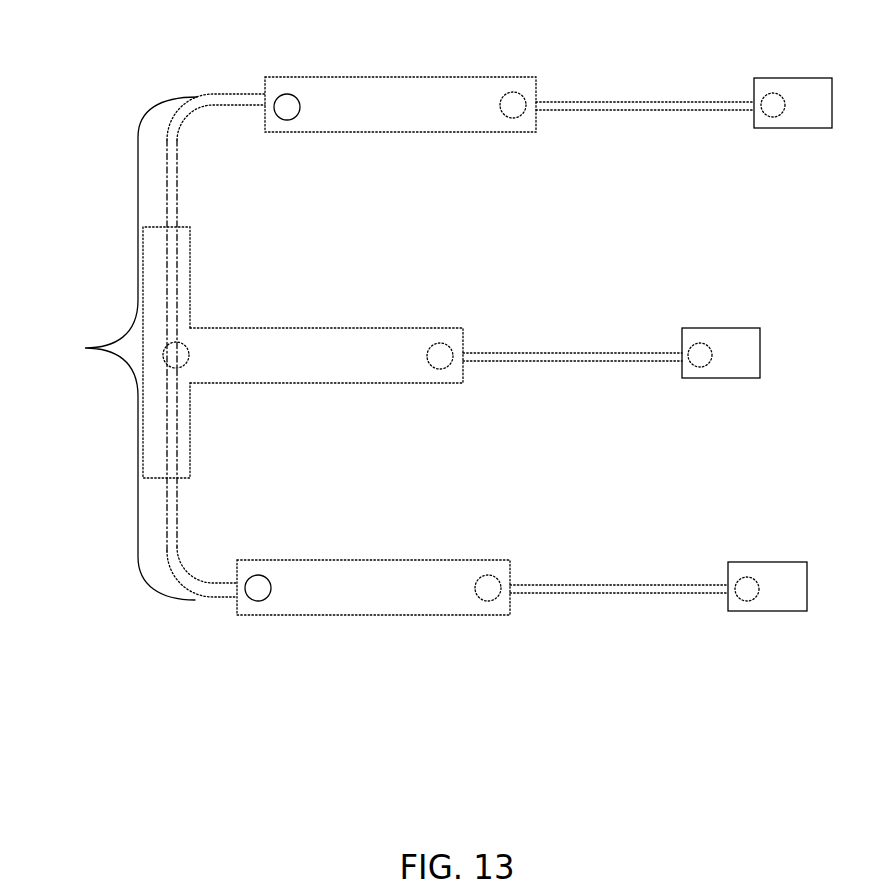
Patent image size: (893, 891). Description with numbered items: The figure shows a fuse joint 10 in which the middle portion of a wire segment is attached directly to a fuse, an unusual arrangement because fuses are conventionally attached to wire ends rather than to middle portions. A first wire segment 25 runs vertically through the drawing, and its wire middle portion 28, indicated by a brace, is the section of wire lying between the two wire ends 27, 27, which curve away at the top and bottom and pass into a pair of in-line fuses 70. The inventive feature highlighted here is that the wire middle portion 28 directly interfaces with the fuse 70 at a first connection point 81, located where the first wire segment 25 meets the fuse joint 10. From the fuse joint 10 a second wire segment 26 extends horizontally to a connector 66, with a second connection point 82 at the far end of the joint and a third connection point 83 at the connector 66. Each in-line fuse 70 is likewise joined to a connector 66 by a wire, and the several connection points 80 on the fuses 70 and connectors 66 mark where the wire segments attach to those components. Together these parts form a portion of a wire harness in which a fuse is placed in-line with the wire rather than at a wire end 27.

The fuse joint 10 is at (303, 376).
The first wire segment 25 is at (185, 515).
The second wire segment 26 is at (555, 353).
The wire end 27 is at (254, 85).
The wire middle portion 28 is at (124, 348).
The connector 66 is at (796, 119).
The in-line fuse 70 is at (368, 119).
The connection point 80 is at (290, 115).
The first connection point 81 is at (186, 362).
The second connection point 82 is at (438, 368).
The third connection point 83 is at (697, 367).